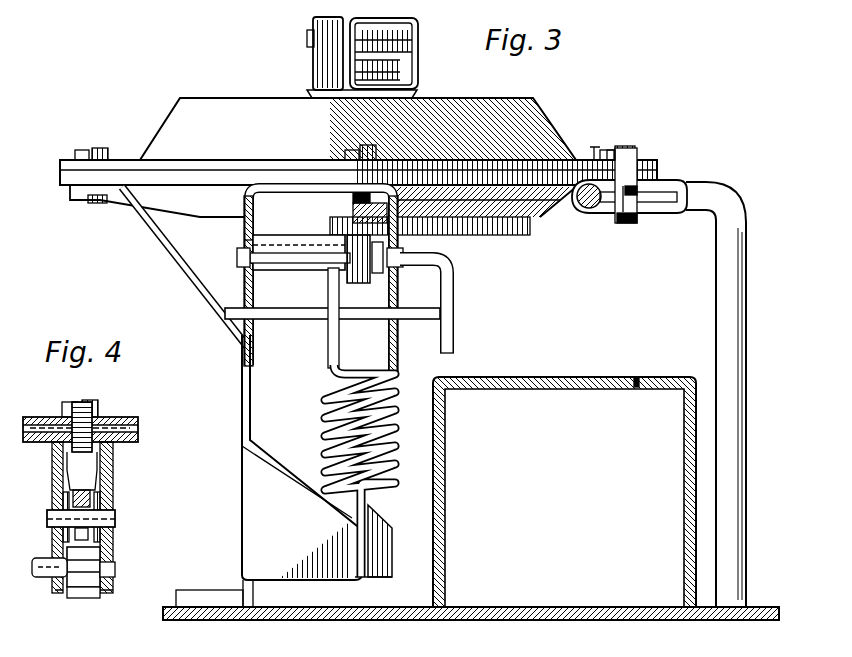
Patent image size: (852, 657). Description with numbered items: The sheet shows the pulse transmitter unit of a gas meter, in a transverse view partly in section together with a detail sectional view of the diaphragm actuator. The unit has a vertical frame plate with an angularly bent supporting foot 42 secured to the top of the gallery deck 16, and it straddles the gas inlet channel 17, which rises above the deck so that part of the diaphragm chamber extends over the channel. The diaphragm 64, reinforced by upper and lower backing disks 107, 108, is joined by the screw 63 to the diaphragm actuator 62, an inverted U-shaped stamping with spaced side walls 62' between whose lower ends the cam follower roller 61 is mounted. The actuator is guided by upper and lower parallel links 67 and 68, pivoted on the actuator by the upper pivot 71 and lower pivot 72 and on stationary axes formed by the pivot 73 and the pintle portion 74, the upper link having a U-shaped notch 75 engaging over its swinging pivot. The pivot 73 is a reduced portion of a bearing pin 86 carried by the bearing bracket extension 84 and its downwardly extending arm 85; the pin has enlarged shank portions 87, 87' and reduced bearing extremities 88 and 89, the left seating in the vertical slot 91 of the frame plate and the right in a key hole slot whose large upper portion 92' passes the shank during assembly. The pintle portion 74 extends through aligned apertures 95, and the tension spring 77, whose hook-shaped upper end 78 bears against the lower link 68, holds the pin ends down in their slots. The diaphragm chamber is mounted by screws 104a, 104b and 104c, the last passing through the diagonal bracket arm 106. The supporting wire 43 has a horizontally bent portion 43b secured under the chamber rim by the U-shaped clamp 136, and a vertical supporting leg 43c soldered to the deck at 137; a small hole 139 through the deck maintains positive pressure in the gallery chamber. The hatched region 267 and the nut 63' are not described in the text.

In FIG. 3, the gallery deck 16 is at (772, 606).
In FIG. 3, the gas inlet channel 17 is at (601, 377).
In FIG. 3, the supporting foot 42 is at (210, 598).
In FIG. 3, the supporting wire 43 is at (728, 190).
In FIG. 3, the horizontally bent portion 43b is at (594, 158).
In FIG. 3, the vertical supporting leg 43c is at (735, 424).
In FIG. 4, the cam follower roller 61 is at (83, 599).
In FIG. 4, the diaphragm actuator 62 is at (61, 517).
In FIG. 4, the side walls 62' is at (76, 602).
In FIG. 4, the screw 63 is at (112, 432).
In FIG. 4, the upper nut 63' is at (100, 407).
In FIG. 4, the diaphragm 64 is at (140, 429).
In FIG. 4, the upper parallel link 67 is at (85, 488).
In FIG. 3, the lower parallel link 68 is at (455, 311).
In FIG. 4, the lower parallel link 68 is at (42, 562).
In FIG. 4, the upper pivot 71 is at (118, 518).
In FIG. 4, the lower pivot 72 is at (104, 572).
In FIG. 3, the stationary pivot 73 is at (358, 236).
In FIG. 3, the pintle portion 74 is at (286, 321).
In FIG. 4, the U-shaped notch 75 is at (112, 536).
In FIG. 3, the tension spring 77 is at (324, 406).
In FIG. 3, the hook-shaped upper end 78 is at (455, 346).
In FIG. 3, the bearing bracket extension 84 is at (299, 184).
In FIG. 3, the downwardly extending arm 85 is at (398, 358).
In FIG. 3, the bearing pin 86 is at (292, 238).
In FIG. 3, the cylindrical shank portion 87 is at (325, 271).
In FIG. 3, the cylindrical shank portion 87' is at (408, 274).
In FIG. 3, the left hand bearing extremity 88 is at (238, 258).
In FIG. 3, the right hand bearing extremity 89 is at (447, 263).
In FIG. 3, the vertical slot 91 is at (244, 241).
In FIG. 3, the large diameter upper portion 92' is at (438, 247).
In FIG. 3, the aligned apertures 95 is at (237, 327).
In FIG. 3, the screw 104a is at (636, 148).
In FIG. 3, the screw 104b is at (358, 145).
In FIG. 3, the screw 104c is at (103, 148).
In FIG. 3, the diagonal bracket arm 106 is at (138, 221).
In FIG. 4, the upper backing disk 107 is at (136, 420).
In FIG. 4, the lower backing disk 108 is at (136, 441).
In FIG. 3, the U-shaped clamp 136 is at (670, 189).
In FIG. 3, the solder joint 137 is at (748, 598).
In FIG. 3, the small hole 139 is at (640, 377).
In FIG. 3, the canopy hatched portion 267 is at (407, 211).